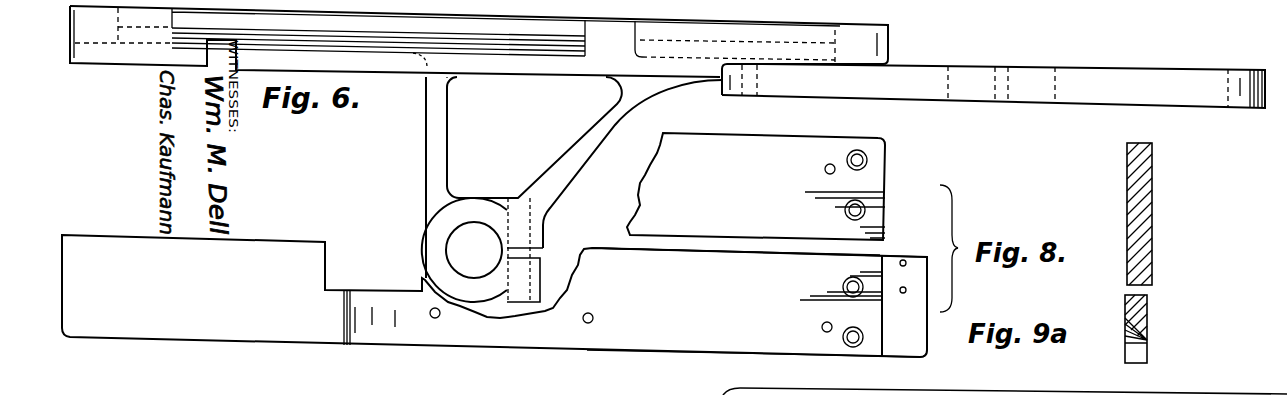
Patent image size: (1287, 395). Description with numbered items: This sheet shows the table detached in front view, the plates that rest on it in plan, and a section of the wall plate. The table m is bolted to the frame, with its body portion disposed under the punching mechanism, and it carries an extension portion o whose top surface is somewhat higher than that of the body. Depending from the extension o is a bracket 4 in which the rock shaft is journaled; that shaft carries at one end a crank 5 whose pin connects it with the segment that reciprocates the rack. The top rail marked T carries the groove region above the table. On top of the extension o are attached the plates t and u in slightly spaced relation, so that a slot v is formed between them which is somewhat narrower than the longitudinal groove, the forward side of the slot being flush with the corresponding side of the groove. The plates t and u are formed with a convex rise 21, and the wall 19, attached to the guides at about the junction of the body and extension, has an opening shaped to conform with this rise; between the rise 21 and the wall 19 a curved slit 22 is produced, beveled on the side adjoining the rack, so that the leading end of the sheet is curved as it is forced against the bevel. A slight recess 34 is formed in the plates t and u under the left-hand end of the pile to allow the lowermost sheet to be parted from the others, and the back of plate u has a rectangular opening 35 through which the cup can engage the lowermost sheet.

In FIG. 6, the top rail T is at (479, 50).
In FIG. 6, the crank 5 is at (410, 43).
In FIG. 6, the extension portion of the table o is at (503, 67).
In FIG. 6, the table m is at (1085, 98).
In FIG. 6, the bracket 4 is at (427, 162).
In FIG. 6, the rectangular opening 35 is at (335, 268).
In FIG. 6, the recess 34 is at (366, 345).
In FIG. 6, the plate t is at (756, 186).
In FIG. 6, the slot v is at (675, 243).
In FIG. 6, the plate u is at (757, 302).
In FIG. 6, the convex rise 21 is at (883, 260).
In FIG. 8, the wall 19 is at (1152, 262).
In FIG. 9A, the curved slit 22 is at (1147, 340).